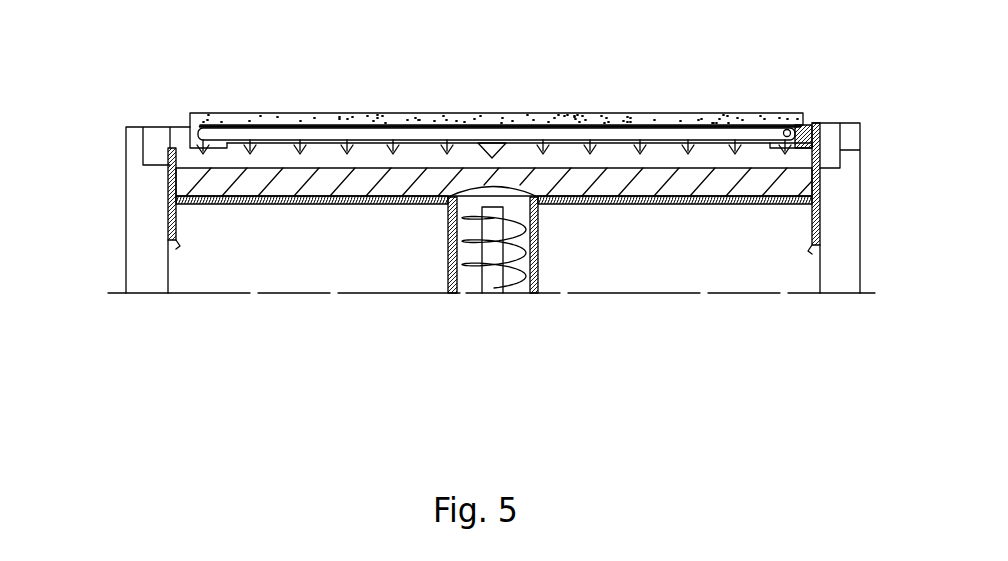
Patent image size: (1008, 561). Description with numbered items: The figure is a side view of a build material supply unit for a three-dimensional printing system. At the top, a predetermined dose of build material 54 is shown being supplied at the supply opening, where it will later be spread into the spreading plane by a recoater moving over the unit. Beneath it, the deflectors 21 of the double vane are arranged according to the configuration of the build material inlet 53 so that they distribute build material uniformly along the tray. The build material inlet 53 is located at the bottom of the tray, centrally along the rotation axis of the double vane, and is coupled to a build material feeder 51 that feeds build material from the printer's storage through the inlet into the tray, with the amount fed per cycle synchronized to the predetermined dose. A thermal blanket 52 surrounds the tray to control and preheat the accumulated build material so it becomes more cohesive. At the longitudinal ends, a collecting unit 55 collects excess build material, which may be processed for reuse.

The collecting unit 55 is at (152, 121).
The predetermined dose of build material 54 is at (279, 107).
The deflectors 21 is at (384, 119).
The build material inlet 53 is at (488, 168).
The thermal blanket 52 is at (613, 189).
The build material feeder 51 is at (524, 283).